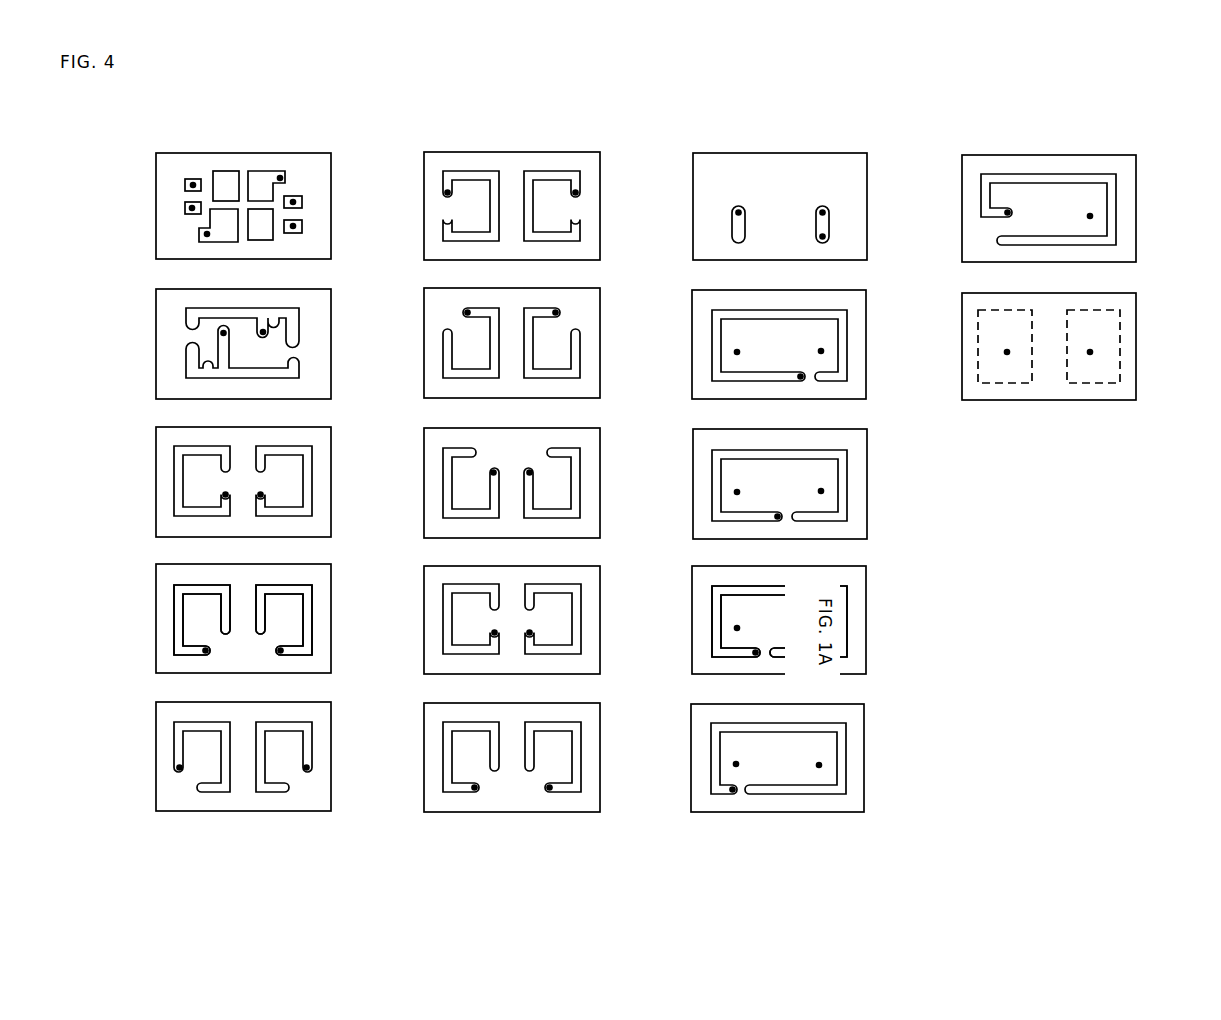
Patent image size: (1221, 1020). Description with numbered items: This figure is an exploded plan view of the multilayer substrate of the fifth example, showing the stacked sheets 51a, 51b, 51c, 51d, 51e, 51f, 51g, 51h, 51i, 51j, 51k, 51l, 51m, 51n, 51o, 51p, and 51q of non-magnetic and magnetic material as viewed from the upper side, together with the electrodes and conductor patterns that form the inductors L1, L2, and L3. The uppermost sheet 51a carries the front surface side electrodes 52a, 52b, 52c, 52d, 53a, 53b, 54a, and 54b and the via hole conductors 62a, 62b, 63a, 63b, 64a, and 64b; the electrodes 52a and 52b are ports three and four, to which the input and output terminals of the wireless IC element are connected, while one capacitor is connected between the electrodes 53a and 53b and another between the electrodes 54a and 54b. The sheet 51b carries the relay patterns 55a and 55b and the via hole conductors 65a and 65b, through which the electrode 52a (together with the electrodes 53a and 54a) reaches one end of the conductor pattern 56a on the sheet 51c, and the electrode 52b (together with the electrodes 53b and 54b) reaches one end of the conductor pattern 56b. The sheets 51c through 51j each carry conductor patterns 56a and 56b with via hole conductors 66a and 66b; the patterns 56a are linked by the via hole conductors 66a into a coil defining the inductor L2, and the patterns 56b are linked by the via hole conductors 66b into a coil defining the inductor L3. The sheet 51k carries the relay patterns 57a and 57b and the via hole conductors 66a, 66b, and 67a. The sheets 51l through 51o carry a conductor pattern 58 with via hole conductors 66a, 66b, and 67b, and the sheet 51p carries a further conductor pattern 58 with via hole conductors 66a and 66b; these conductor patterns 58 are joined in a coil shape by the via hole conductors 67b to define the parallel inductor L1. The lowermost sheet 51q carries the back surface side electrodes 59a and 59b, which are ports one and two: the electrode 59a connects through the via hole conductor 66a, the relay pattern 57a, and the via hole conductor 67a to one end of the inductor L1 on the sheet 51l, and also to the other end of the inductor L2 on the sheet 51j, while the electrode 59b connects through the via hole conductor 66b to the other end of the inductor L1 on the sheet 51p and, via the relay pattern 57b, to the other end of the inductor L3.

The sheet 51a is at (332, 208).
The sheet 51b is at (332, 344).
The sheet 51c is at (332, 483).
The sheet 51d is at (332, 620).
The sheet 51e is at (332, 757).
The sheet 51f is at (601, 205).
The sheet 51g is at (601, 342).
The sheet 51h is at (601, 483).
The sheet 51i is at (601, 620).
The sheet 51j is at (601, 758).
The sheet 51k is at (868, 209).
The sheet 51l is at (867, 345).
The sheet 51m is at (867, 485).
The sheet 51n is at (867, 622).
The sheet 51o is at (865, 759).
The sheet 51p is at (1137, 210).
The sheet 51q is at (1137, 347).
The front surface side electrode 52a is at (258, 171).
The front surface side electrode 52b is at (218, 242).
The front surface side electrode 52c is at (226, 171).
The front surface side electrode 52d is at (262, 241).
The electrode 53a is at (302, 200).
The electrode 53b is at (300, 229).
The electrode 54a is at (185, 186).
The electrode 54b is at (188, 211).
The relay pattern 55a is at (300, 323).
The relay pattern 55b is at (290, 380).
The conductor pattern 56a is at (311, 453).
The conductor pattern 56b is at (174, 482).
The relay pattern 57a is at (816, 222).
The relay pattern 57b is at (745, 220).
The conductor pattern 58 is at (848, 325).
The back surface side electrode 59a is at (1077, 310).
The back surface side electrode 59b is at (982, 310).
The via hole conductor 62a is at (281, 177).
The via hole conductor 62b is at (206, 236).
The via hole conductor 63a is at (294, 201).
The via hole conductor 63b is at (294, 226).
The via hole conductor 64a is at (193, 183).
The via hole conductor 64b is at (185, 207).
The via hole conductor 65a is at (263, 335).
The via hole conductor 65b is at (221, 333).
The via hole conductor 66a is at (261, 497).
The via hole conductor 66b is at (225, 497).
The via hole conductor 67a is at (822, 242).
The via hole conductor 67b is at (801, 380).
The parallel inductor L1 is at (840, 578).
The inductor L2 is at (302, 581).
The inductor L3 is at (166, 580).